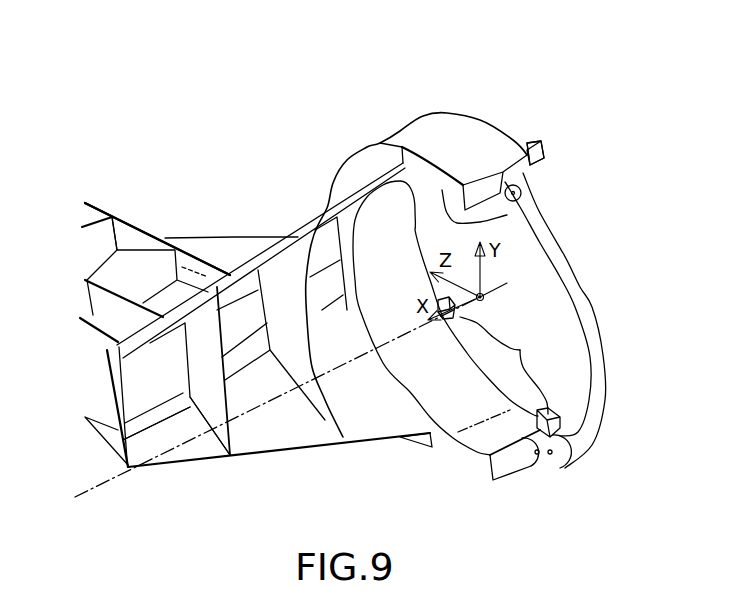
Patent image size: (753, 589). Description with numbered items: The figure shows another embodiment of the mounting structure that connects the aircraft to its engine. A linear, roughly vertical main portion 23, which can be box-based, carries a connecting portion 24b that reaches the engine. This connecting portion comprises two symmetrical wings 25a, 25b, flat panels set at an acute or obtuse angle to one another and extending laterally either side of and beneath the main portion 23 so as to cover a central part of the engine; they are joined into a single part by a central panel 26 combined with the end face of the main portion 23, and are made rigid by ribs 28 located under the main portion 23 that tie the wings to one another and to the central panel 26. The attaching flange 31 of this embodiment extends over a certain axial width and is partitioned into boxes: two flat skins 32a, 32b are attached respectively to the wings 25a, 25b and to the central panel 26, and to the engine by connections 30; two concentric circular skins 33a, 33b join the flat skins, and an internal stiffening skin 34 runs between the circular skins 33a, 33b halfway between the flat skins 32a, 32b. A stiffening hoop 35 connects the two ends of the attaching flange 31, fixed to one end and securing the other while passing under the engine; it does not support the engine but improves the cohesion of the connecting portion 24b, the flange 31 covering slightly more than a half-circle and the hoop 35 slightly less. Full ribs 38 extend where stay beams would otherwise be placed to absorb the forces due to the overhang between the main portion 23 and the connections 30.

The main portion 23 is at (119, 246).
The connecting portion 24b is at (128, 168).
The wing 25a is at (268, 232).
The wing 25b is at (354, 425).
The central panel 26 is at (157, 383).
The ribs 28 is at (310, 425).
The connections 30 is at (537, 148).
The attaching flange 31 is at (502, 115).
The flat skin 32a is at (500, 218).
The flat skin 32b is at (545, 165).
The circular skin 33a is at (458, 132).
The circular skin 33b is at (450, 410).
The internal stiffening skin 34 is at (537, 462).
The stiffening hoop 35 is at (583, 298).
The full ribs 38 is at (232, 247).